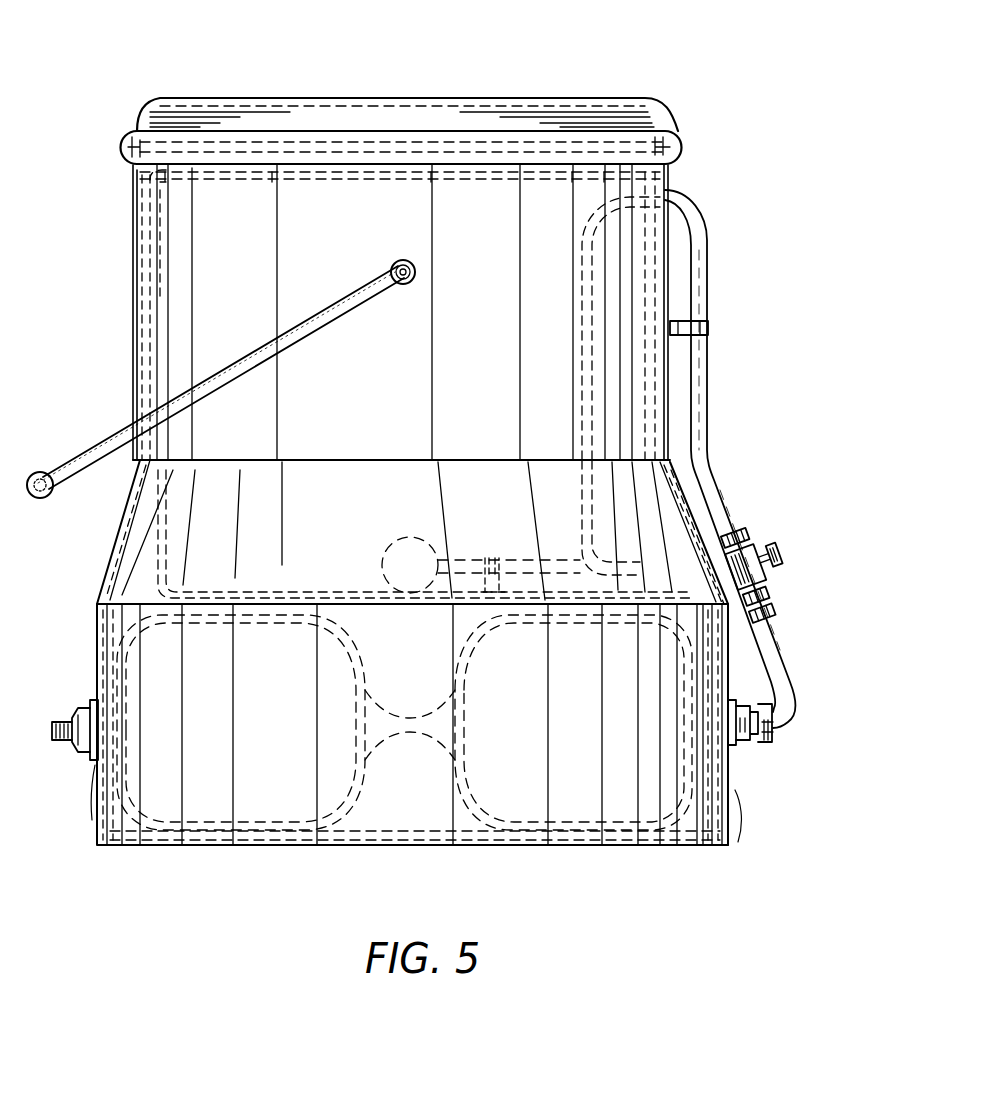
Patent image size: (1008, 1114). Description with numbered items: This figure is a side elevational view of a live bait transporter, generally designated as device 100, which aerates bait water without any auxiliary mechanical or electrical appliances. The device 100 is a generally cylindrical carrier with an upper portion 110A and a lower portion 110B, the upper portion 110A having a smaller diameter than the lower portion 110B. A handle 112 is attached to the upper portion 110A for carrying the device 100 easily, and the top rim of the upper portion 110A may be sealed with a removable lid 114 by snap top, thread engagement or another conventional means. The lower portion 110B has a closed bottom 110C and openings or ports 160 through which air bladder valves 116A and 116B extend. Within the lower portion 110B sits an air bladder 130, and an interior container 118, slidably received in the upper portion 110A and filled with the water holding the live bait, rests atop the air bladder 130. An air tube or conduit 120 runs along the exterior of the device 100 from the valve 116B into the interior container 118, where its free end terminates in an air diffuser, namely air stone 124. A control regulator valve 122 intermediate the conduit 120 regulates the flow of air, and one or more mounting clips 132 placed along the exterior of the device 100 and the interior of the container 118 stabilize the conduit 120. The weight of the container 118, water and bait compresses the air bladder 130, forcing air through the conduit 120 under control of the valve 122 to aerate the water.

The device 100 is at (640, 65).
The removable lid 114 is at (148, 108).
The interior container 118 is at (202, 230).
The upper portion 110A is at (135, 330).
The handle 112 is at (38, 470).
The mounting clips 132 is at (490, 552).
The air tube or conduit 120 is at (715, 440).
The control regulator valve 122 is at (758, 540).
The air stone 124 is at (383, 555).
The lower portion 110B is at (95, 612).
The air bladder valve 116A is at (52, 740).
The air bladder valve 116B is at (765, 748).
The air bladder 130 is at (213, 792).
The closed bottom 110C is at (580, 846).
The openings or ports 160 is at (92, 820).